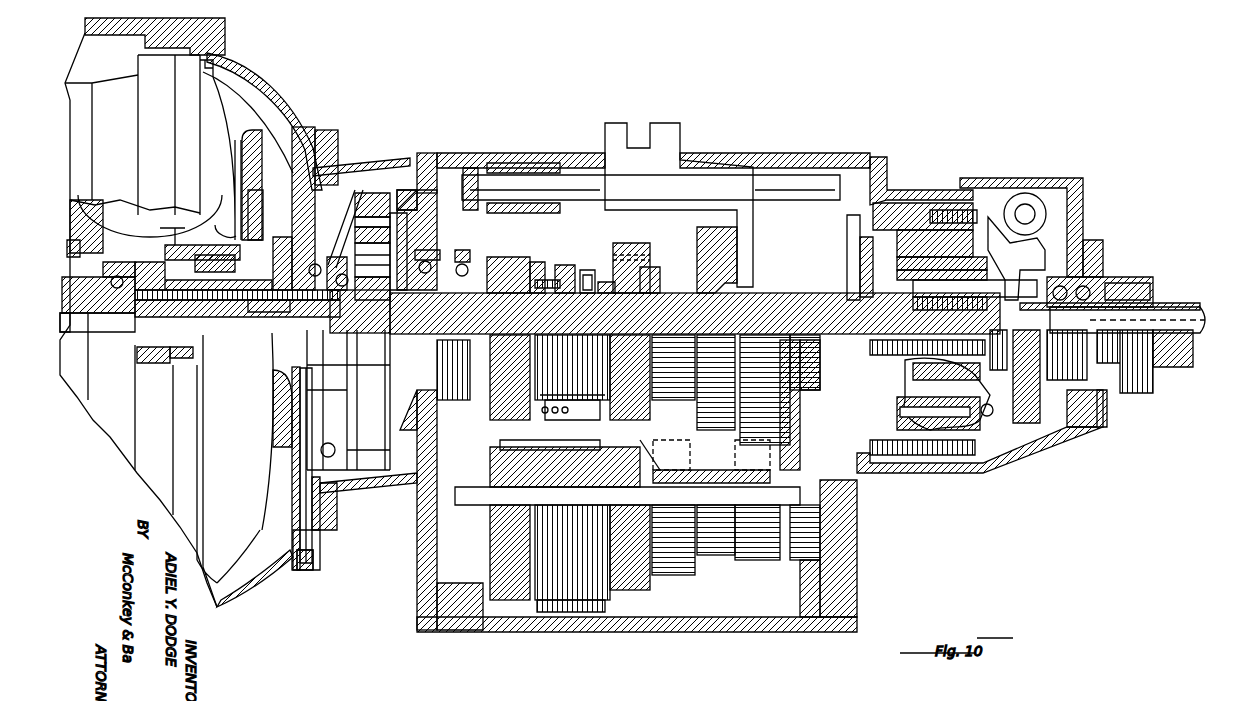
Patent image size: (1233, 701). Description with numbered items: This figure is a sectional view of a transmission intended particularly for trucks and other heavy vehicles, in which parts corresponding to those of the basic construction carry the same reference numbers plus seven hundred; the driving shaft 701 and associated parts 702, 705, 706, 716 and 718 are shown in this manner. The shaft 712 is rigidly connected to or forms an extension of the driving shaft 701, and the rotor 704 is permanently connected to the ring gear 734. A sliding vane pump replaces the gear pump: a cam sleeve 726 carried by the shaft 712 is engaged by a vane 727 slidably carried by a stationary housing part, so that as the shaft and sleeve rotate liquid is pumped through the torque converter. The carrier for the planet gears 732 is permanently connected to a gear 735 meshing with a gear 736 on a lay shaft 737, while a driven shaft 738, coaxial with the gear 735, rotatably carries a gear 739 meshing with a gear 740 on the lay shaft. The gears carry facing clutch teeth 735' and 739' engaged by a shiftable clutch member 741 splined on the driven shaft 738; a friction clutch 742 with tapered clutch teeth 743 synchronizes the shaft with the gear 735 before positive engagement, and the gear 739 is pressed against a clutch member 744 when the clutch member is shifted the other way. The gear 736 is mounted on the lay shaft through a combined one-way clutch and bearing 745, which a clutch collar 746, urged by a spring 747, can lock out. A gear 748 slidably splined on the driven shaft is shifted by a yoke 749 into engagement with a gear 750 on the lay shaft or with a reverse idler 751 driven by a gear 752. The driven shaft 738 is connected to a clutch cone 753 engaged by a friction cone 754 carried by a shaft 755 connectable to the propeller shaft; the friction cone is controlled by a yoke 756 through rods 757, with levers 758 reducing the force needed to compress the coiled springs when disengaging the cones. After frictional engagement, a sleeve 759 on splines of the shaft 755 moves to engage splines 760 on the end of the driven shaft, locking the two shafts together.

The driving shaft 701 is at (95, 320).
The flywheel 702 is at (92, 202).
The rotor 704 is at (155, 225).
The pressure plate 705 is at (224, 215).
The bearing 706 is at (200, 320).
The shaft 712 is at (260, 333).
The bell housing 716 is at (245, 93).
The shaft collar 718 is at (395, 319).
The cam sleeve 726 is at (140, 347).
The vane 727 is at (198, 340).
The planet gears 732 is at (405, 215).
The ring gear 734 is at (375, 197).
The gear 735 is at (508, 256).
The clutch teeth 735' is at (535, 256).
The gear 736 is at (513, 600).
The lay shaft 737 is at (630, 473).
The driven shaft 738 is at (678, 303).
The gear 739 is at (642, 256).
The clutch teeth 739' is at (623, 256).
The gear 740 is at (637, 585).
The shiftable clutch member 741 is at (600, 273).
The friction clutch 742 is at (588, 244).
The tapered clutch teeth 743 is at (537, 277).
The clutch member 744 is at (653, 267).
The combined one-way clutch and bearing 745 is at (553, 450).
The clutch collar 746 is at (583, 593).
The spring 747 is at (560, 597).
The gear 748 is at (722, 230).
The yoke 749 is at (742, 177).
The gear 750 is at (680, 568).
The reverse idler 751 is at (748, 443).
The gear 752 is at (748, 550).
The clutch cone 753 is at (887, 233).
The friction cone 754 is at (930, 243).
The shaft 755 is at (1175, 323).
The yoke 756 is at (1012, 290).
The rods 757 is at (1002, 290).
The levers 758 is at (997, 410).
The sleeve 759 is at (913, 230).
The splines 760 is at (853, 255).